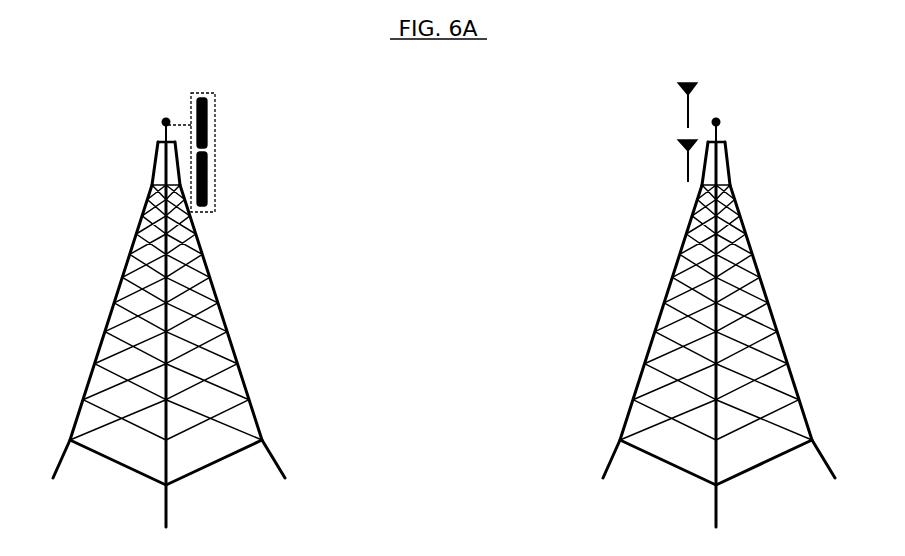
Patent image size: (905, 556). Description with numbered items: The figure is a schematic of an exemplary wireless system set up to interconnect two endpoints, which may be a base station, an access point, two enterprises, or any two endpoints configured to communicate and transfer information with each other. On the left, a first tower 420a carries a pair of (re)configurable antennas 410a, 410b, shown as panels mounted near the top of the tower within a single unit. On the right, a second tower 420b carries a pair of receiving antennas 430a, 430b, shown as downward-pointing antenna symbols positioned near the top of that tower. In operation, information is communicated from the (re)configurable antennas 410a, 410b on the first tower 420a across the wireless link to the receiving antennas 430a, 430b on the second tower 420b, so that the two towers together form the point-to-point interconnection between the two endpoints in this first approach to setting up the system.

The reconfigurable antenna 410a is at (207, 99).
The reconfigurable antenna 410b is at (208, 185).
The first tower 420a is at (223, 335).
The second tower 420b is at (667, 308).
The receiving antenna 430a is at (682, 107).
The receiving antenna 430b is at (683, 157).